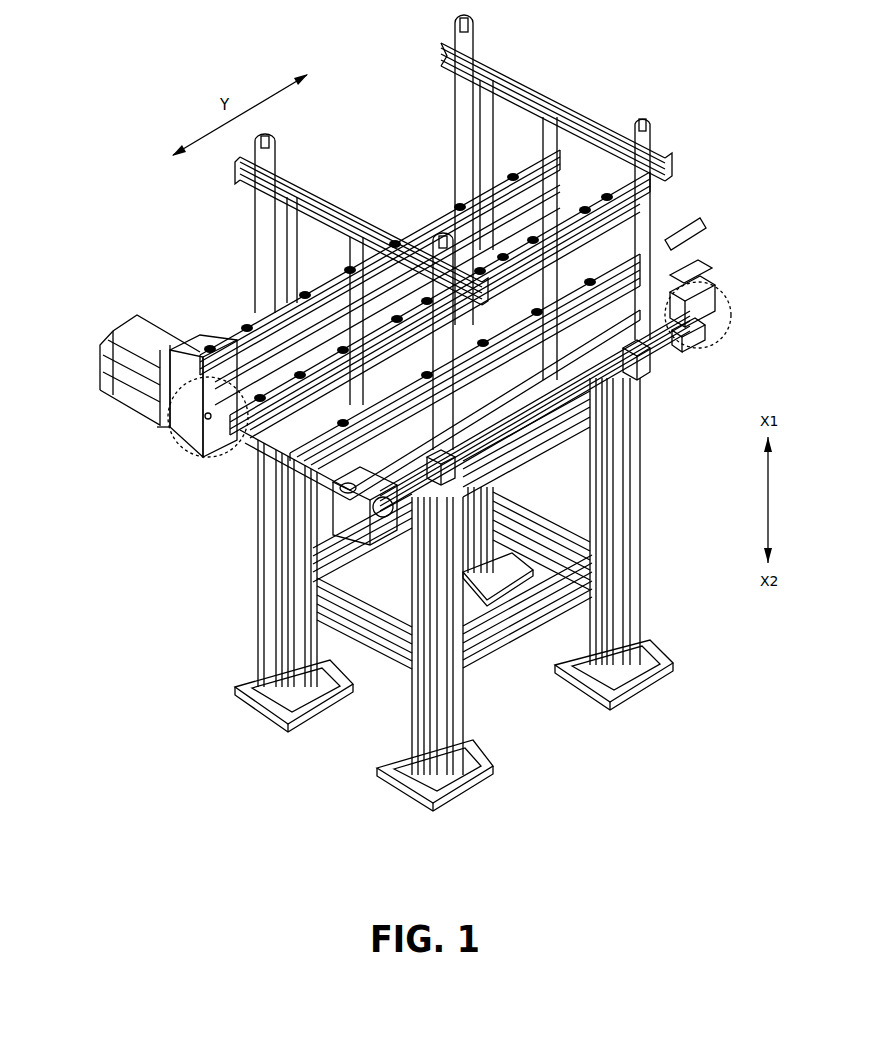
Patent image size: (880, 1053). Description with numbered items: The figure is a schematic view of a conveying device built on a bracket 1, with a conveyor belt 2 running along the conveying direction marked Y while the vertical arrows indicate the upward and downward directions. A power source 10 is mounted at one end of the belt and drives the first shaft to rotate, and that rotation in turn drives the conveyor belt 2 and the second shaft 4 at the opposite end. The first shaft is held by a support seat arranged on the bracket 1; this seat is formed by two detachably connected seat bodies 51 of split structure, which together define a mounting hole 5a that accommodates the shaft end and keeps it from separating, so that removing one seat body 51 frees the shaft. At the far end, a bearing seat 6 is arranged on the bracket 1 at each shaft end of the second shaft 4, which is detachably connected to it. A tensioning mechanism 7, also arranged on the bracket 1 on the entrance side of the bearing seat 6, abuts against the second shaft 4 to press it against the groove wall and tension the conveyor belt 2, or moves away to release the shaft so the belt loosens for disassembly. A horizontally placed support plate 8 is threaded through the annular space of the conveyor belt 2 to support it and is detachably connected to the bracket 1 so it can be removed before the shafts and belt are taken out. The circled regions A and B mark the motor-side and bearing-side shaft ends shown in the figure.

The bracket 1 is at (640, 435).
The conveyor belt 2 is at (258, 440).
The second shaft 4 is at (720, 322).
The mounting hole 5a is at (370, 543).
The bearing seat 6 is at (710, 280).
The tensioning mechanism 7 is at (683, 347).
The support plate 8 is at (565, 405).
The power source 10 is at (96, 340).
The seat body 51 is at (325, 497).
The region A is at (190, 453).
The region B is at (730, 300).